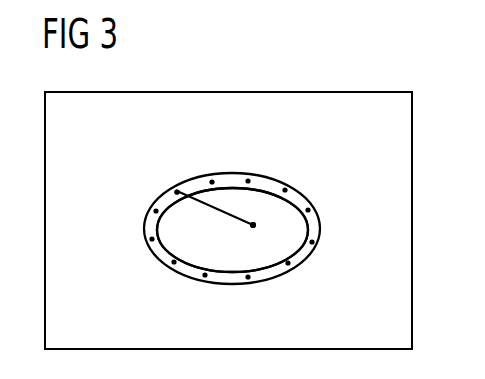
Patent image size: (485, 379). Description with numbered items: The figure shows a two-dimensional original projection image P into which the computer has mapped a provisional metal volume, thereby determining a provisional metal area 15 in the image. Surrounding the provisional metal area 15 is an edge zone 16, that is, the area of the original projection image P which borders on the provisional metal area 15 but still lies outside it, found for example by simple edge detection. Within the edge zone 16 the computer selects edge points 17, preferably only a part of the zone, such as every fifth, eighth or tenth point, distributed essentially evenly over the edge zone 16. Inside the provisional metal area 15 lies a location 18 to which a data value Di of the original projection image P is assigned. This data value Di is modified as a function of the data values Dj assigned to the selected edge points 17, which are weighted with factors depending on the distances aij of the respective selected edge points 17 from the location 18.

The provisional metal area 15 is at (171, 242).
The edge zone 16 is at (146, 223).
The edge point 17 is at (311, 245).
The location 18 is at (255, 225).
The original projection image P is at (236, 92).
The data value of selected edge point Dj is at (177, 190).
The data value of location in provisional metal area Di is at (253, 222).
The distance aij is at (212, 207).